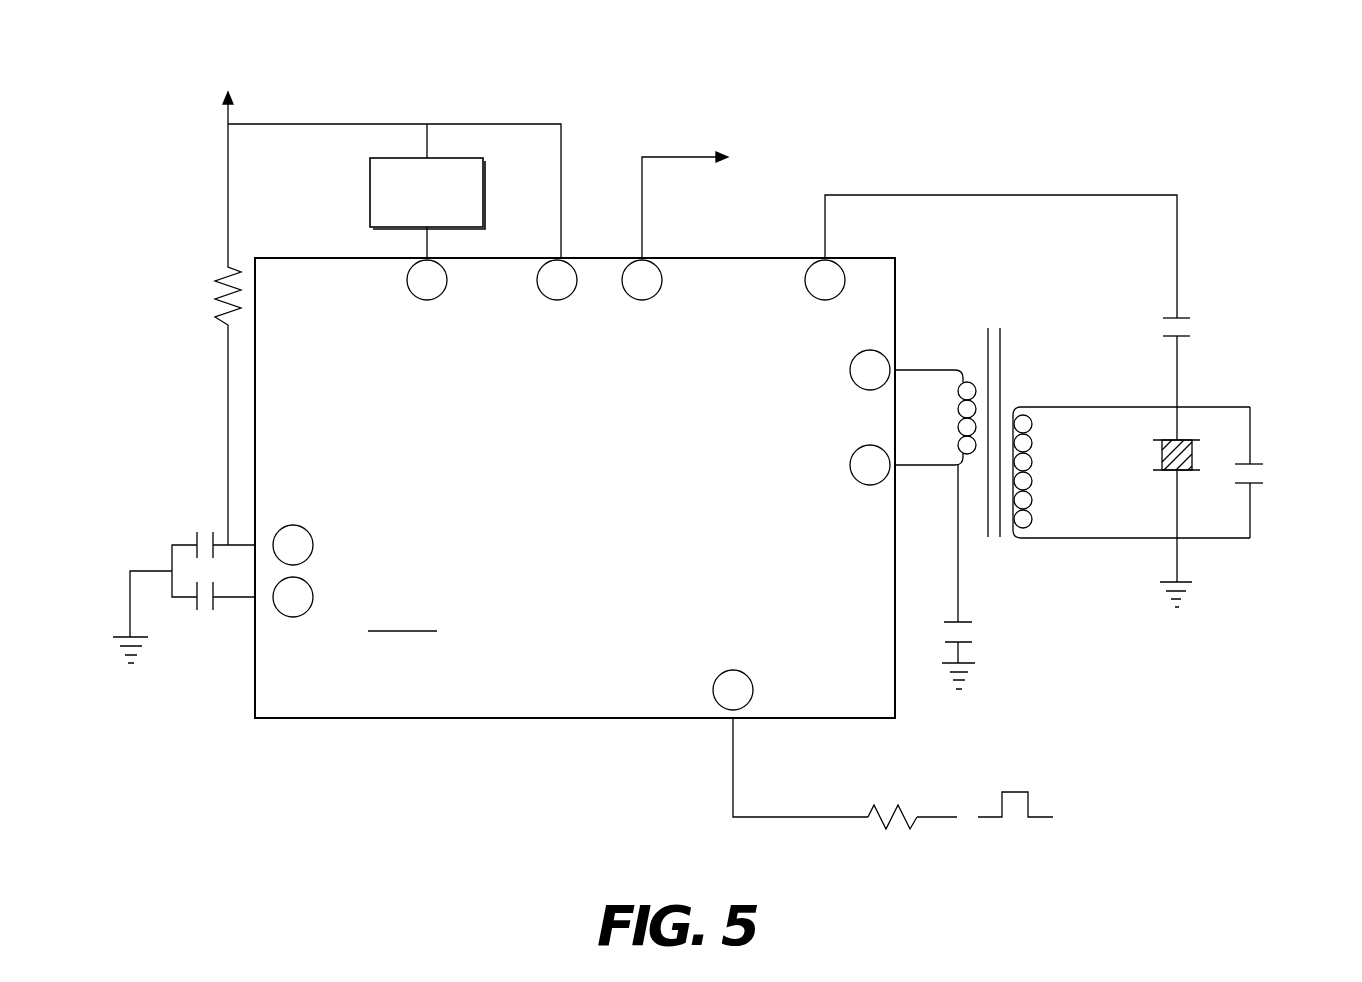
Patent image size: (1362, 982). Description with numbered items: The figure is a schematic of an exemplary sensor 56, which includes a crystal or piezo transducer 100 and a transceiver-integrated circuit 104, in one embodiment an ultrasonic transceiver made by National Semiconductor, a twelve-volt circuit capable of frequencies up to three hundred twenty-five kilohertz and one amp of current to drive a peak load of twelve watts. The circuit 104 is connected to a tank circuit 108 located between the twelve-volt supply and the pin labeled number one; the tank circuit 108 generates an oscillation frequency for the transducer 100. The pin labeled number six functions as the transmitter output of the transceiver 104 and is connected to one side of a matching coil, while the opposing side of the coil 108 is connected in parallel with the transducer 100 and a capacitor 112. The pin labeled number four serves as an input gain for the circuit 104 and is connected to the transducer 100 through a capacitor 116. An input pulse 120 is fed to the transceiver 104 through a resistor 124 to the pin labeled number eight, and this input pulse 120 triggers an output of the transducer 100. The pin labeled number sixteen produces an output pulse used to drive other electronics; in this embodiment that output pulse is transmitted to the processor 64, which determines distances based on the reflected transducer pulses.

The sensor 56 is at (1212, 100).
The processor 64 is at (872, 172).
The transducer 100 is at (1160, 455).
The transceiver-integrated circuit 104 is at (627, 631).
The tank circuit 108 is at (370, 187).
The capacitor 112 is at (1262, 473).
The capacitor 116 is at (1188, 328).
The input pulse 120 is at (1040, 820).
The resistor 124 is at (897, 800).